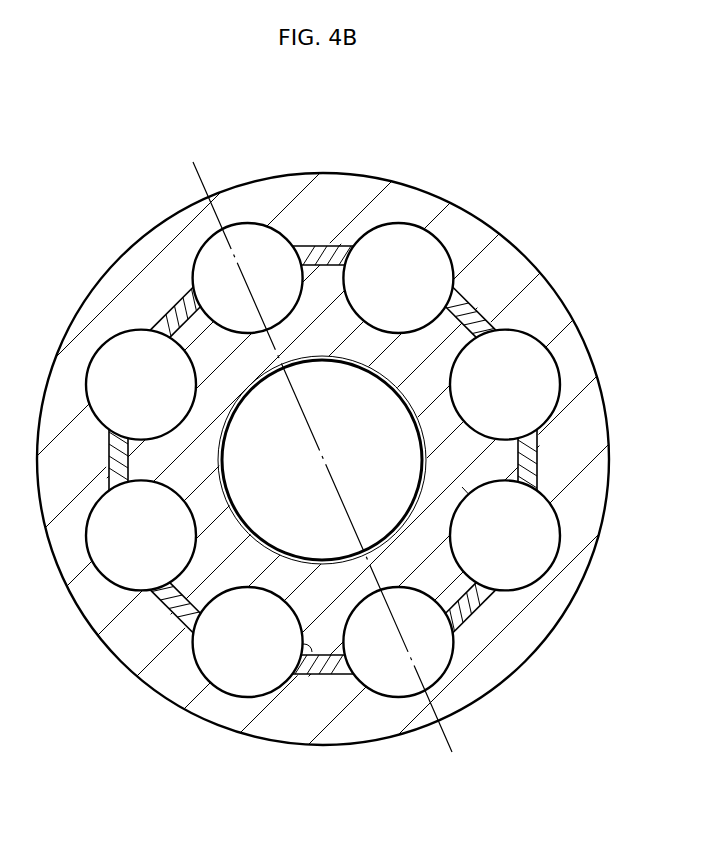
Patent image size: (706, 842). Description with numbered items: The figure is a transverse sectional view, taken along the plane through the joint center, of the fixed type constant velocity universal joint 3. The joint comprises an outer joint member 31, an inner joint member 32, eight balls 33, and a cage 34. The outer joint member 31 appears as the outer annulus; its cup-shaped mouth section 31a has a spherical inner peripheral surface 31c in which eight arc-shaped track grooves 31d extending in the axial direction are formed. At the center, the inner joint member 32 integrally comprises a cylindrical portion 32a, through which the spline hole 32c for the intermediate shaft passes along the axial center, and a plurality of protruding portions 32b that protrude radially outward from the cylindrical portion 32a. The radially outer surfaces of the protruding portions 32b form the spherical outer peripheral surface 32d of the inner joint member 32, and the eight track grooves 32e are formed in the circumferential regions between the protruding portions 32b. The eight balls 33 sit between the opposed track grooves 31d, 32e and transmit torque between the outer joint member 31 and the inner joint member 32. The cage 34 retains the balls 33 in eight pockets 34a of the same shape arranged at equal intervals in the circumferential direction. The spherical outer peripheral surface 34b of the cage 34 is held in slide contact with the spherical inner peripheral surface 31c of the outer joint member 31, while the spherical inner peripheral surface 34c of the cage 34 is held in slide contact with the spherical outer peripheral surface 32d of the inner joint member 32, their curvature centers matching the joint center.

The fixed type constant velocity universal joint 3 is at (488, 162).
The outer joint member 31 is at (487, 222).
The mouth section 31a is at (548, 312).
The spherical inner peripheral surface 31c is at (478, 302).
The track grooves 31d is at (408, 228).
The inner joint member 32 is at (353, 421).
The cylindrical portion 32a is at (443, 503).
The protruding portions 32b is at (503, 460).
The spline hole 32c is at (341, 363).
The spherical outer peripheral surface 32d is at (463, 607).
The track grooves 32e is at (473, 503).
The balls 33 is at (257, 240).
The cage 34 is at (177, 603).
The pockets 34a is at (207, 615).
The spherical outer peripheral surface 34b is at (327, 678).
The spherical inner peripheral surface 34c is at (303, 640).